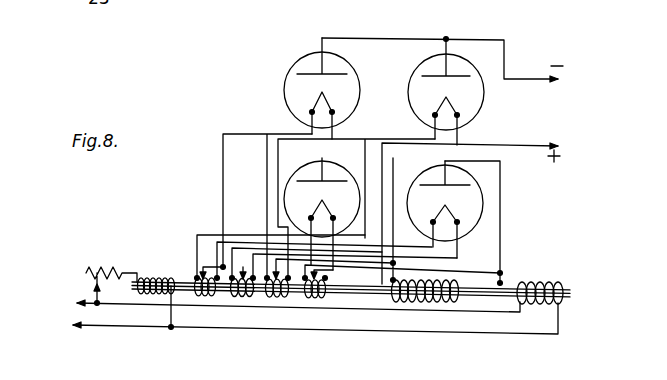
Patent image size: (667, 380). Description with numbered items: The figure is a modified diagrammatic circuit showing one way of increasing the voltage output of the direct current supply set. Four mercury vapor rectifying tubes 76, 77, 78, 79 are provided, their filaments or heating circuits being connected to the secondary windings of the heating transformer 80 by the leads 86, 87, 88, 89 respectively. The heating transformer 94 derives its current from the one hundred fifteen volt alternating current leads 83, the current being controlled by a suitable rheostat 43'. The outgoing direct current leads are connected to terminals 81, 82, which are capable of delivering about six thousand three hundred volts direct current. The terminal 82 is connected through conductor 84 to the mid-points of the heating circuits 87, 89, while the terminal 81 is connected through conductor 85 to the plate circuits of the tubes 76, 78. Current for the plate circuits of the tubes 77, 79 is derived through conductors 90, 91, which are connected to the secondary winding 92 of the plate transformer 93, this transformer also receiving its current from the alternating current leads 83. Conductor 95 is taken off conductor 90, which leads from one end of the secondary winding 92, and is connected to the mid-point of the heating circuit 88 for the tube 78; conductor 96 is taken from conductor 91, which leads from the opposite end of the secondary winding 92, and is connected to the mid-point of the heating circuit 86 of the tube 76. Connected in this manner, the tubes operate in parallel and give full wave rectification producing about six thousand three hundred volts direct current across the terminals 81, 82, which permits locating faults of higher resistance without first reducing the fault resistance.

The mercury vapor rectifying tube 76 is at (290, 84).
The mercury vapor rectifying tube 77 is at (292, 188).
The mercury vapor rectifying tube 78 is at (411, 84).
The mercury vapor rectifying tube 79 is at (475, 212).
The secondary windings of the heating transformer 80 is at (262, 296).
The terminal 81 is at (563, 79).
The terminal 82 is at (565, 143).
The alternating current leads 83 is at (68, 309).
The conductor 84 is at (223, 173).
The conductor 85 is at (432, 38).
The lead (heating circuit) 86 is at (280, 192).
The lead (heating circuit) 87 is at (216, 249).
The lead (heating circuit) 88 is at (370, 195).
The lead (heating circuit) 89 is at (450, 250).
The conductor 90 is at (501, 184).
The conductor 91 is at (381, 284).
The secondary winding 92 is at (470, 302).
The plate transformer 93 is at (538, 304).
The heating transformer 94 is at (146, 277).
The conductor 95 is at (455, 271).
The conductor 96 is at (298, 296).
The rheostat 43' is at (111, 262).